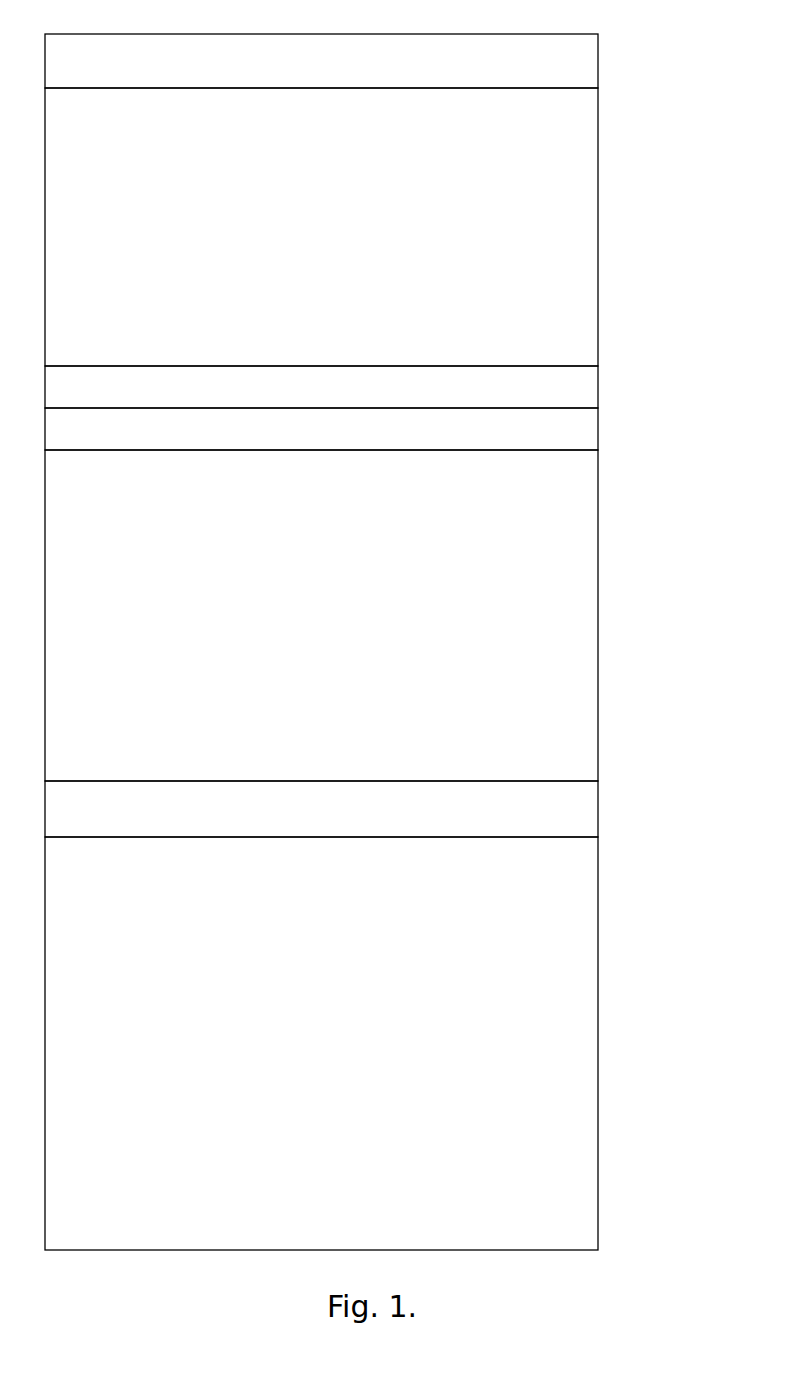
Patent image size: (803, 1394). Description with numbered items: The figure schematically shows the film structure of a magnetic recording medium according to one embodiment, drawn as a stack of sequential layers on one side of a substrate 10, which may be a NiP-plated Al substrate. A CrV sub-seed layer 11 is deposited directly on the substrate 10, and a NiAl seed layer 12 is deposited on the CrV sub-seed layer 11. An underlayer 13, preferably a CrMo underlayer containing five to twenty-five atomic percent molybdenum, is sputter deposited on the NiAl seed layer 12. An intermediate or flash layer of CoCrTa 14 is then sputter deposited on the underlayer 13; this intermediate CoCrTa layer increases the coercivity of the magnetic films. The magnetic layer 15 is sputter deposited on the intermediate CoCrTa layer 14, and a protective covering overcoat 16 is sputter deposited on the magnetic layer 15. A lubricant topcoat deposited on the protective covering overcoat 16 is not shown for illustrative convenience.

The substrate 10 is at (625, 1050).
The CrV sub-seed layer 11 is at (625, 805).
The NiAl seed layer 12 is at (625, 626).
The underlayer 13 is at (625, 432).
The intermediate or flash layer of CoCrTa 14 is at (625, 390).
The magnetic layer 15 is at (625, 227).
The protective covering overcoat 16 is at (625, 58).